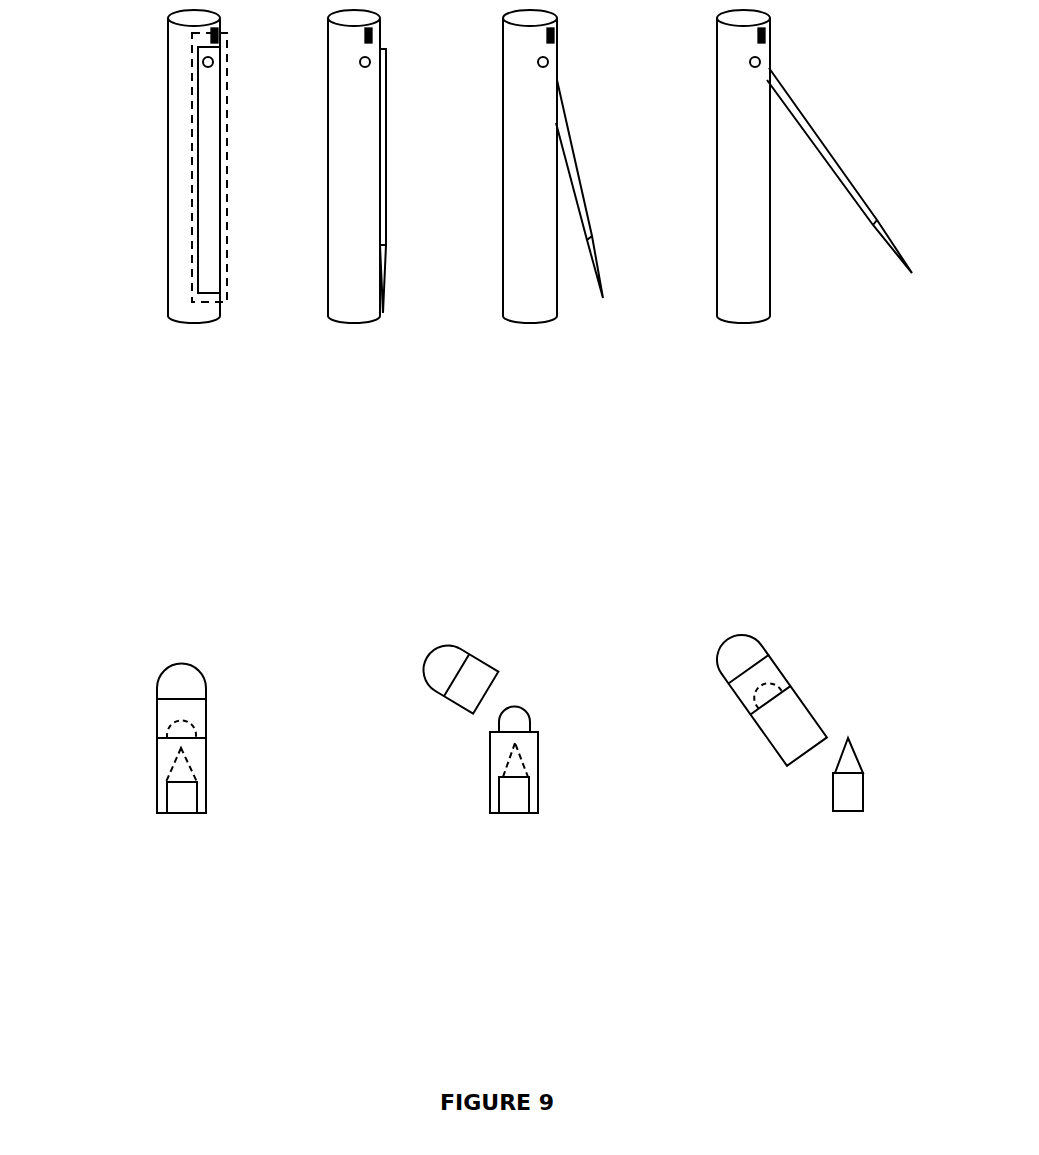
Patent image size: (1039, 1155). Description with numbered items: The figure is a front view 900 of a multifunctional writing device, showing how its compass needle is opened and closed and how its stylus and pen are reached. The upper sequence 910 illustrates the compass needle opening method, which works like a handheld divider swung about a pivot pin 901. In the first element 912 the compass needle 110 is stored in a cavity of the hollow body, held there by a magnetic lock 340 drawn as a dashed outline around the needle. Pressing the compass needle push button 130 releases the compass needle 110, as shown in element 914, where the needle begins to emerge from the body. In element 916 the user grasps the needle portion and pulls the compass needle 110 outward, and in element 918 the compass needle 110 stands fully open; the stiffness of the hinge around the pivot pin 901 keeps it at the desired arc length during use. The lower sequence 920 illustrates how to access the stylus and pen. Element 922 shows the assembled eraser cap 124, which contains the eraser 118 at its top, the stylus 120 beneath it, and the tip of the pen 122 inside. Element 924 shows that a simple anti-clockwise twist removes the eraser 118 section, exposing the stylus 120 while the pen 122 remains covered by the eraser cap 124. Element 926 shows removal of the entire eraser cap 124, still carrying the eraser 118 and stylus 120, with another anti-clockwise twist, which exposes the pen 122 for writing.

The front view 900 is at (97, 1033).
The compass needle opening method 910 is at (120, 388).
The stored compass needle element 912 is at (213, 365).
The released compass needle element 914 is at (373, 365).
The pulled compass needle element 916 is at (552, 365).
The open compass needle element 918 is at (764, 365).
The compass needle 110 is at (196, 149).
The compass needle push button 130 is at (222, 36).
The pivot pin 901 is at (215, 63).
The magnetic lock 340 is at (231, 166).
The stylus and pen access element 920 is at (123, 888).
The assembled eraser cap element 922 is at (200, 863).
The stylus access element 924 is at (537, 856).
The pen access element 926 is at (866, 855).
The eraser 118 is at (202, 667).
The stylus 120 is at (197, 725).
The pen 122 is at (199, 768).
The eraser cap 124 is at (208, 808).